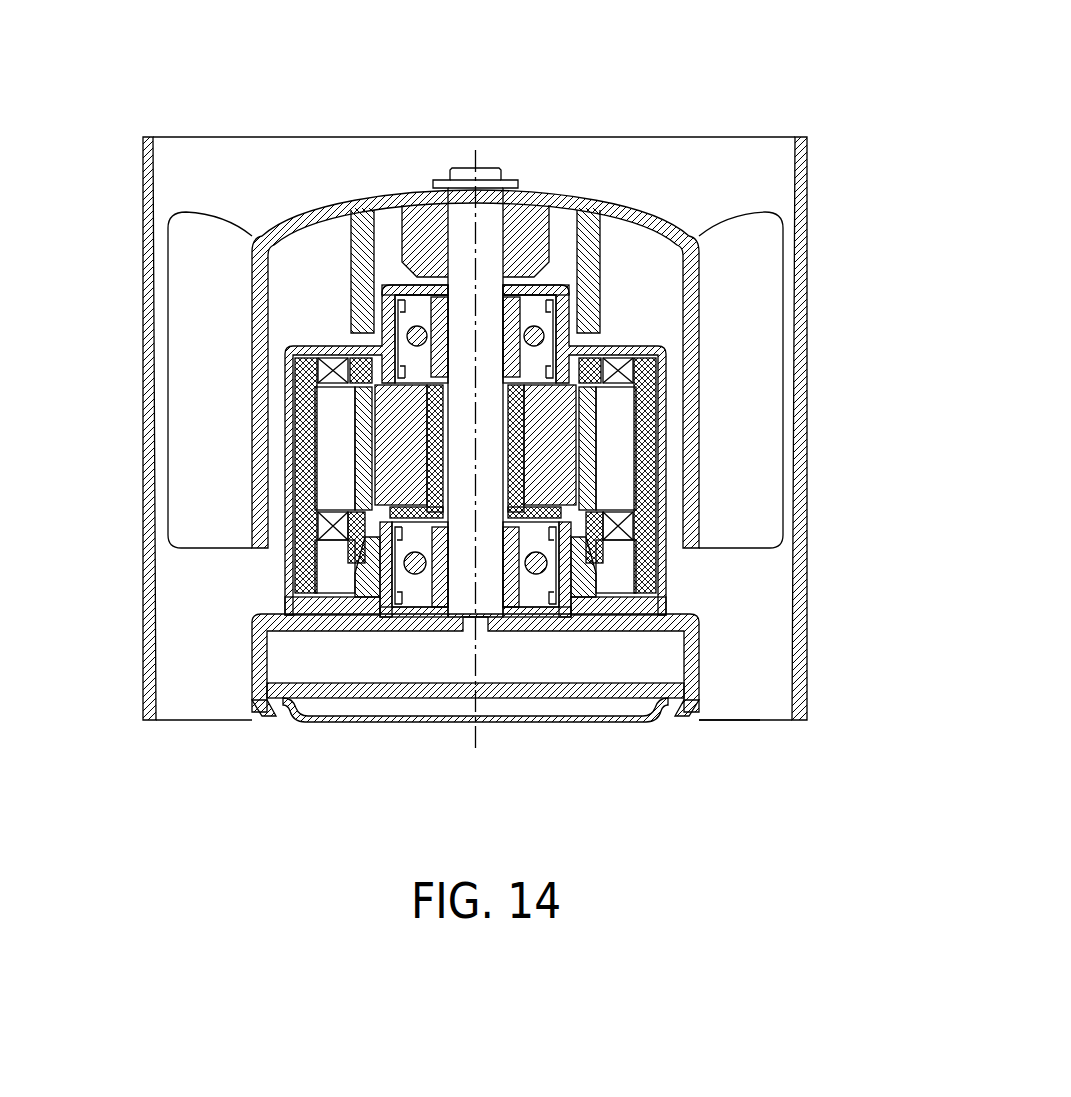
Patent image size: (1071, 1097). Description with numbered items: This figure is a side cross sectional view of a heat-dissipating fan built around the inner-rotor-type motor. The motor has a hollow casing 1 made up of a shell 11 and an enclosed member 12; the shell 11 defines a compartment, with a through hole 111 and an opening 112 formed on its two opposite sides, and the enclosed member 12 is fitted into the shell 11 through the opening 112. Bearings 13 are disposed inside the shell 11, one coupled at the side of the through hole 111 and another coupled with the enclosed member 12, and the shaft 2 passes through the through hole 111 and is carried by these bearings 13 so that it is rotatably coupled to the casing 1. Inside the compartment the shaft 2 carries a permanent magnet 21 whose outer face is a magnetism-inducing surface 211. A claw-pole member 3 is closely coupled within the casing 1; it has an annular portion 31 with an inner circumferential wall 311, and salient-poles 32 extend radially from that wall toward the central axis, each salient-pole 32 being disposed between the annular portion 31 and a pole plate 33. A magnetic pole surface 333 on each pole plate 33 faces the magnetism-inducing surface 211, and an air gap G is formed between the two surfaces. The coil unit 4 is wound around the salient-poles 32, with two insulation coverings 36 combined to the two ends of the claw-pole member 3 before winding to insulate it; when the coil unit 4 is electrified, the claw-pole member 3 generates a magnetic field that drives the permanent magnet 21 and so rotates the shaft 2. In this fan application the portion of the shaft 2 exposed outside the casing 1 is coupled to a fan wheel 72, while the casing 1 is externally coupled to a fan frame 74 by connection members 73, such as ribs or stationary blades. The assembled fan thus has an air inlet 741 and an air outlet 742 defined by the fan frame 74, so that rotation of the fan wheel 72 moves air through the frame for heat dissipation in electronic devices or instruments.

The casing 1 is at (477, 431).
The shell 11 is at (562, 431).
The through hole 111 is at (527, 287).
The opening 112 is at (670, 716).
The enclosed member 12 is at (430, 727).
The bearings 13 is at (550, 296).
The shaft 2 is at (463, 215).
The permanent magnet 21 is at (272, 398).
The magnetism-inducing surface 211 is at (340, 455).
The claw-pole member 3 is at (370, 440).
The annular portion 31 is at (313, 487).
The inner circumferential wall 311 is at (308, 545).
The salient-poles 32 is at (323, 403).
The pole plate 33 is at (345, 467).
The magnetic pole surface 333 is at (320, 478).
The insulation coverings 36 is at (303, 355).
The coil unit 4 is at (333, 367).
The air gap G is at (363, 345).
The fan wheel 72 is at (637, 210).
The connection members 73 is at (728, 706).
The fan frame 74 is at (803, 428).
The air inlet 741 is at (772, 142).
The air outlet 742 is at (755, 716).